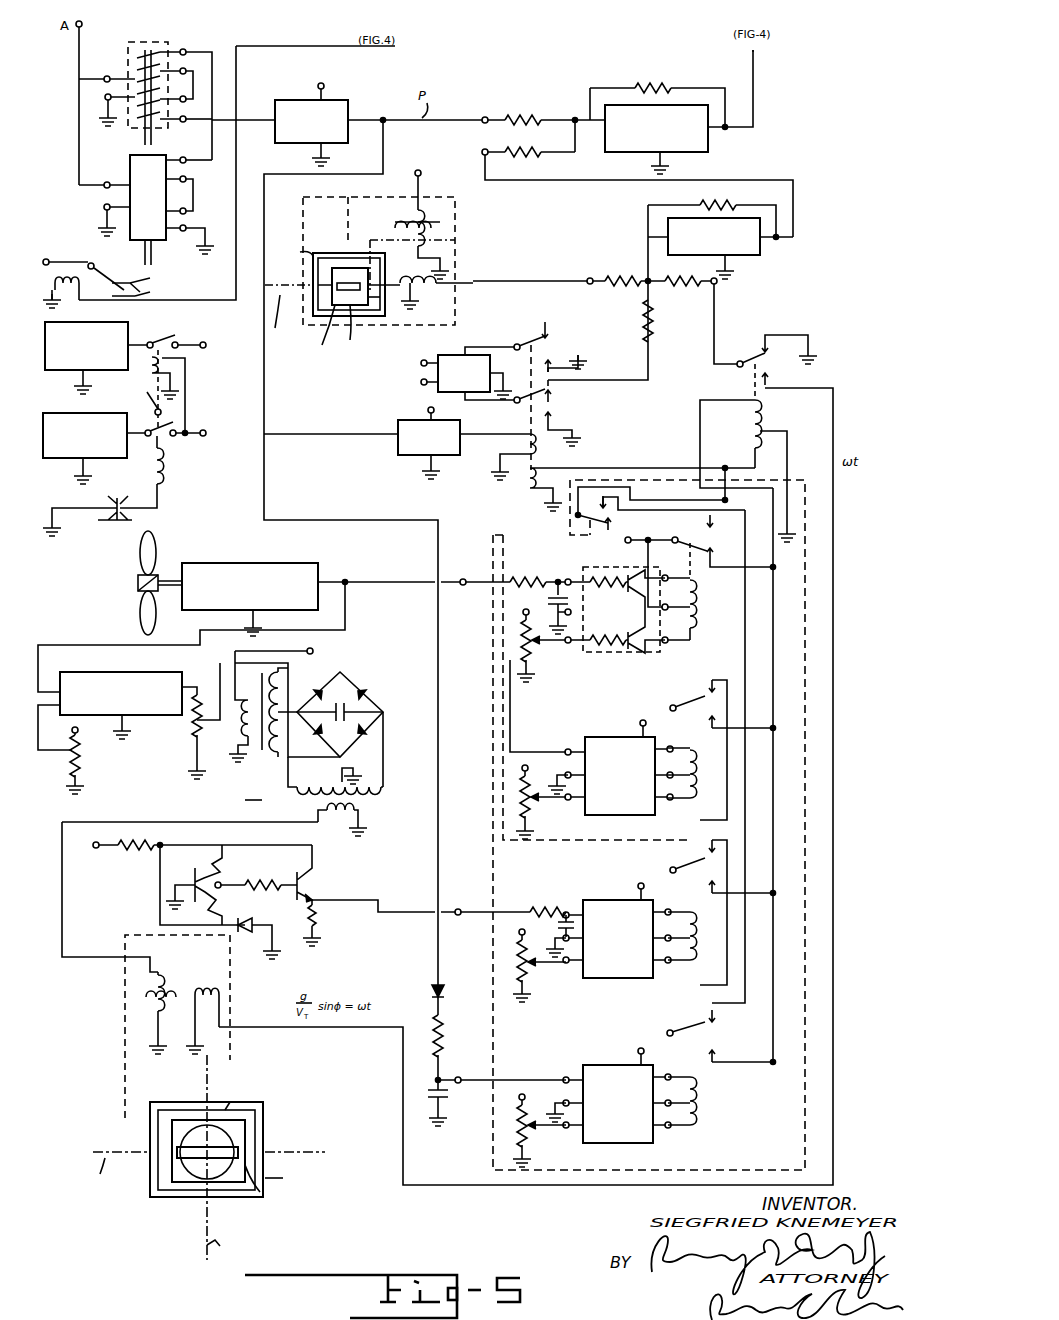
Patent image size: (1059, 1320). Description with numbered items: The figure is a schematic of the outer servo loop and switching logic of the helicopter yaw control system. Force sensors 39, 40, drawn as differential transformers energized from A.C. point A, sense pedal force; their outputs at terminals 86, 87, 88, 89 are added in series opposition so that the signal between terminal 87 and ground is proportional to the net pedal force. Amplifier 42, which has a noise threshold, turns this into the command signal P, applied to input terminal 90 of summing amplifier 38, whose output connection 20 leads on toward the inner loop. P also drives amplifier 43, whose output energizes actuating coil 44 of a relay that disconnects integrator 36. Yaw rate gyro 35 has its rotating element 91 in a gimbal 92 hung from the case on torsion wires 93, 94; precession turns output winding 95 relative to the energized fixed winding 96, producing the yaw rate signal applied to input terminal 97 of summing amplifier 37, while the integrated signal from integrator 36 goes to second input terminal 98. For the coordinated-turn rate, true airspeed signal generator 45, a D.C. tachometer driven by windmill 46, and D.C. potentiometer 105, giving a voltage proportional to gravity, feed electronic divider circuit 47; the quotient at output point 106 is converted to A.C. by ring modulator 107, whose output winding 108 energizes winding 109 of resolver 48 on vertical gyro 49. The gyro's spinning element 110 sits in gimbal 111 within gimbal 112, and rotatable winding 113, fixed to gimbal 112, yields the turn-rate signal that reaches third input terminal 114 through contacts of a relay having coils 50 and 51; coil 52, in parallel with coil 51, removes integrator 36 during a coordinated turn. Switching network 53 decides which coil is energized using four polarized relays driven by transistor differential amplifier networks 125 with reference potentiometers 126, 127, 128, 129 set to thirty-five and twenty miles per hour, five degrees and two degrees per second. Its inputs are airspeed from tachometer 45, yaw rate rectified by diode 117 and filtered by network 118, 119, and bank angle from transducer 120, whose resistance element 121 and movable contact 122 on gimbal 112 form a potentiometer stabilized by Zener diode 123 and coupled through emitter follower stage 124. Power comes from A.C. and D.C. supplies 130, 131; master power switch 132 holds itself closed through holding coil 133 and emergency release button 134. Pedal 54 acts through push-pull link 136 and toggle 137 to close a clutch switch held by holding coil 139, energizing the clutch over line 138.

The output lead to FIG. 4 20 is at (753, 62).
The yaw rate gyro 35 is at (456, 209).
The integrator 36 is at (449, 357).
The summing amplifier 37 is at (788, 269).
The summing amplifier 38 is at (575, 79).
The force sensor 39 is at (127, 58).
The force sensor 40 is at (128, 170).
The amplifier 42 is at (337, 100).
The amplifier 43 is at (409, 458).
The actuating coil 44 is at (538, 448).
The true airspeed signal generator 45 is at (242, 554).
The windmill 46 is at (141, 575).
The electronic divider circuit 47 is at (126, 672).
The sine resolver 48 is at (174, 1050).
The vertical gyro 49 is at (304, 1097).
The coil 50 is at (763, 410).
The coil 51 is at (762, 450).
The coil 52 is at (526, 482).
The switching network 53 is at (520, 528).
The pedal 54 is at (104, 262).
The output terminal 86 is at (184, 50).
The output terminal 87 is at (184, 122).
The output terminal 88 is at (187, 162).
The output terminal 89 is at (184, 234).
The input terminal 90 is at (485, 117).
The rotating element 91 is at (356, 330).
The gimbal 92 is at (323, 335).
The torsion wire 93 is at (330, 283).
The torsion wire 94 is at (378, 300).
The output winding 95 is at (428, 288).
The fixed winding 96 is at (422, 212).
The input terminal 97 is at (591, 278).
The input terminal 98 is at (651, 338).
The D.C. potentiometer 105 is at (78, 750).
The output point 106 is at (190, 722).
The ring modulator 107 is at (380, 690).
The output winding 108 is at (326, 808).
The winding 109 is at (160, 976).
The spinning element 110 is at (225, 1145).
The gimbal 111 is at (262, 1193).
The gimbal 112 is at (182, 1196).
The rotatable winding 113 is at (208, 992).
The input terminal 114 is at (717, 284).
The diode 117 is at (446, 992).
The filter network 118 is at (445, 1036).
The filter network 119 is at (447, 1095).
The transducer 120 is at (152, 890).
The resistance element 121 is at (198, 872).
The movable contact 122 is at (220, 883).
The Zener diode 123 is at (238, 935).
The emitter follower stage 124 is at (324, 889).
The transistor differential amplifier network 125 is at (612, 572).
The adjustable D.C. potentiometer 126 is at (520, 640).
The adjustable D.C. potentiometer 127 is at (520, 792).
The adjustable D.C. potentiometer 128 is at (518, 956).
The adjustable D.C. potentiometer 129 is at (518, 1128).
The A.C. power supply 130 is at (50, 372).
The D.C. power supply 131 is at (50, 460).
The master power switch 132 is at (137, 408).
The holding coil 133 is at (164, 462).
The emergency release button 134 is at (116, 502).
The push-pull link 136 is at (146, 279).
The toggle 137 is at (144, 293).
The line 138 is at (292, 46).
The holding coil 139 is at (66, 290).